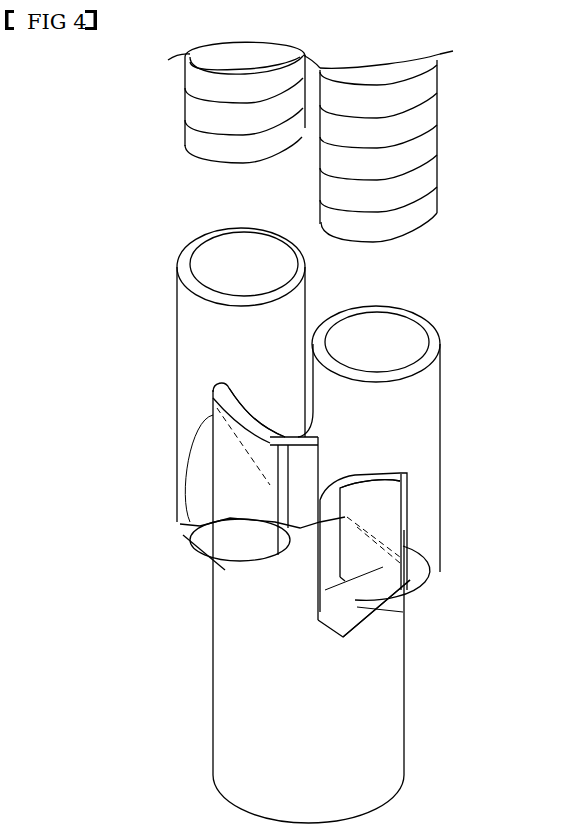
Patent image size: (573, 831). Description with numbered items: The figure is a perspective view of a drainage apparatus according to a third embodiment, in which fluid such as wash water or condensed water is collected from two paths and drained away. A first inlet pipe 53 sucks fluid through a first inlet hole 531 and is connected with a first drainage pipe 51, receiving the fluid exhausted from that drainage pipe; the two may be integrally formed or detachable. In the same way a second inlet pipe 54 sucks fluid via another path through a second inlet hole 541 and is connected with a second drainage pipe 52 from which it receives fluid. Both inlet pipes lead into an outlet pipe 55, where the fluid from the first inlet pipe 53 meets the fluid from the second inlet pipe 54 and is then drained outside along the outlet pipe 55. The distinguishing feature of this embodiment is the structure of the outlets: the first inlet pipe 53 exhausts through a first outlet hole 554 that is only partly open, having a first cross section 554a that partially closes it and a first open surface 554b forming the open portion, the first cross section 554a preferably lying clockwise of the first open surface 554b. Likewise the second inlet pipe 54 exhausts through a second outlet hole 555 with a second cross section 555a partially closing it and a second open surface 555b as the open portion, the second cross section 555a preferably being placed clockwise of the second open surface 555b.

The first drainage pipe 51 is at (190, 103).
The second drainage pipe 52 is at (440, 135).
The first inlet pipe 53 is at (177, 335).
The first inlet hole 531 is at (206, 256).
The second inlet pipe 54 is at (440, 418).
The second inlet hole 541 is at (405, 332).
The outlet pipe 55 is at (222, 690).
The first outlet hole 554 is at (125, 513).
The first cross section 554a is at (233, 548).
The first open surface 554b is at (182, 525).
The second outlet hole 555 is at (493, 530).
The second cross section 555a is at (388, 520).
The second open surface 555b is at (408, 613).